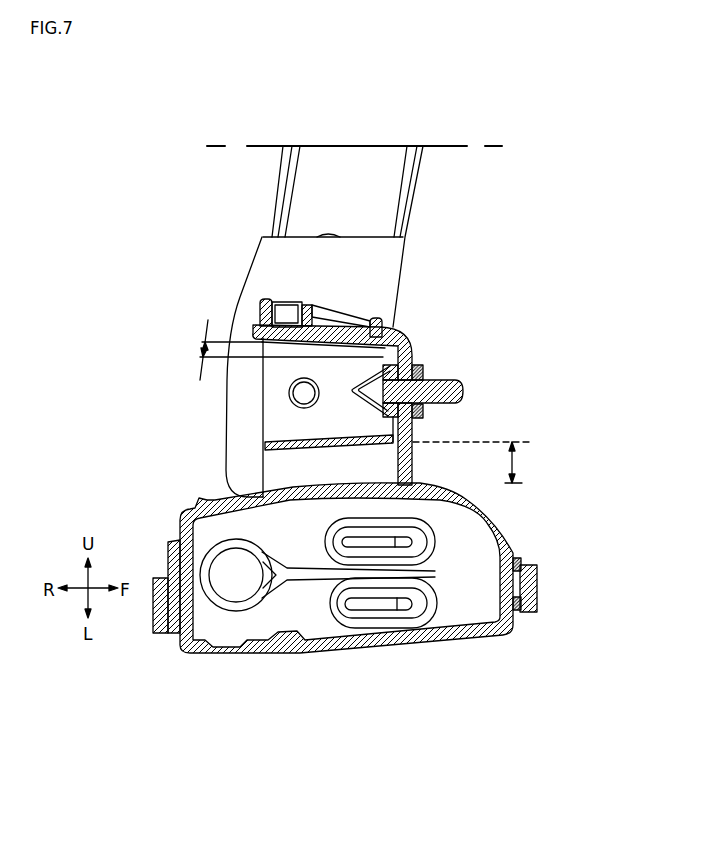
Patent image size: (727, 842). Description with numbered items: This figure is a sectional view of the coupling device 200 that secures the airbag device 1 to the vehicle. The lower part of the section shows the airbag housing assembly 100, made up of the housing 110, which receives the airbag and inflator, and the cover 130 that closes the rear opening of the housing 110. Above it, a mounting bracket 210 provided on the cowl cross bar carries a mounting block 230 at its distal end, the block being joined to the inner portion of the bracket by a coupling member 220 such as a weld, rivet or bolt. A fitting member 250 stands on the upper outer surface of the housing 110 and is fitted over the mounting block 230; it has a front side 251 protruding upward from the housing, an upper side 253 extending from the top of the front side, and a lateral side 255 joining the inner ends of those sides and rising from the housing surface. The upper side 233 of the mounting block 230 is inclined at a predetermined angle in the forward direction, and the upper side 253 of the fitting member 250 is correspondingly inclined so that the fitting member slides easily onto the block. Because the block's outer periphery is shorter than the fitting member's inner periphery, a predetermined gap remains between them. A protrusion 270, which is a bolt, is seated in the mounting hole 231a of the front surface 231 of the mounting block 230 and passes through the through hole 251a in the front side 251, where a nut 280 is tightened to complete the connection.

The airbag device 1 is at (146, 356).
The airbag housing assembly 100 is at (345, 665).
The housing 110 is at (493, 527).
The cover 130 is at (512, 633).
The coupling device 200 is at (522, 309).
The mounting bracket 210 is at (413, 192).
The coupling member 220 is at (300, 398).
The mounting block 230 is at (418, 338).
The front surface 231 is at (423, 368).
The mounting hole 231a is at (424, 413).
The upper side 233 is at (343, 335).
The fitting member 250 is at (420, 328).
The front side 251 is at (414, 424).
The through hole 251a is at (425, 387).
The upper side 253 is at (358, 326).
The lateral side 255 is at (282, 468).
The protrusion 270 is at (465, 392).
The nut 280 is at (425, 372).